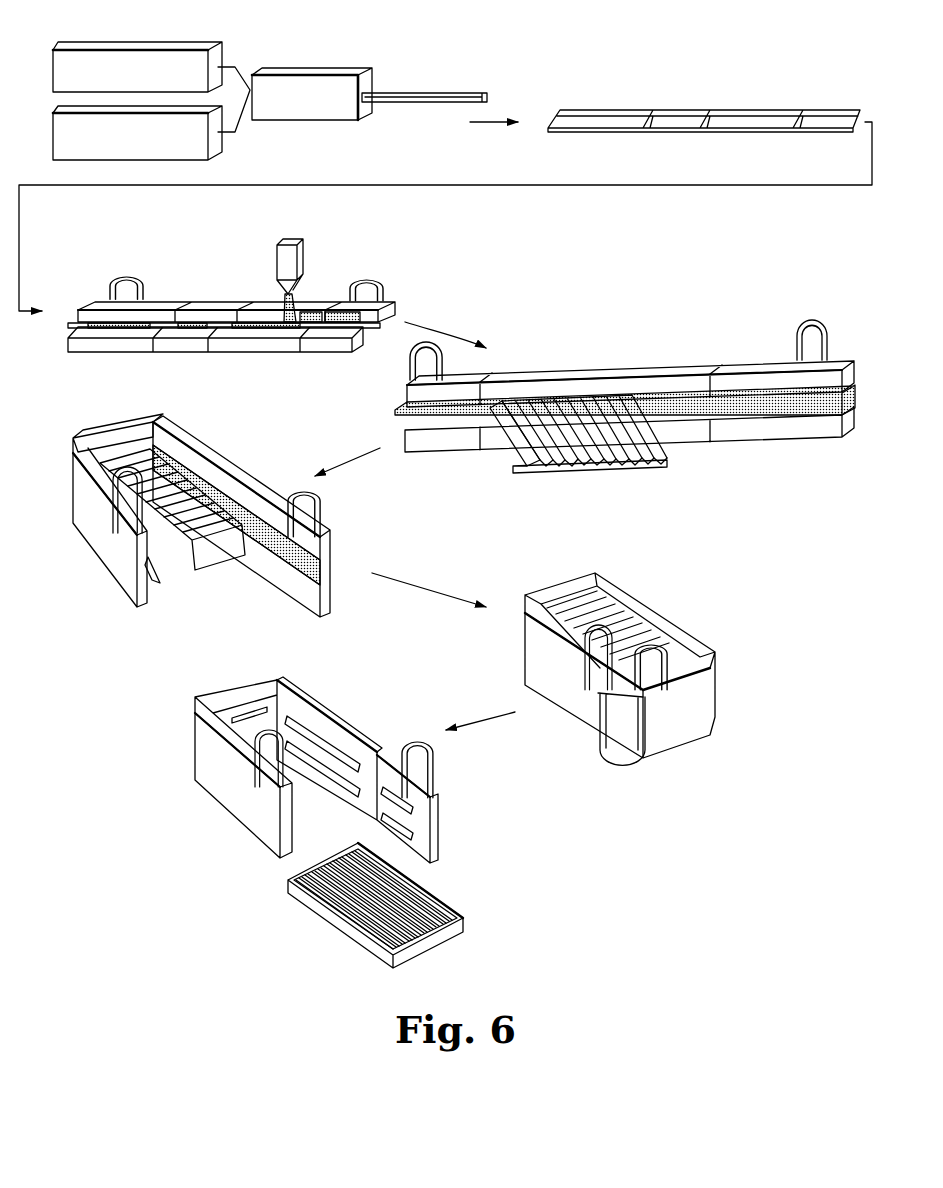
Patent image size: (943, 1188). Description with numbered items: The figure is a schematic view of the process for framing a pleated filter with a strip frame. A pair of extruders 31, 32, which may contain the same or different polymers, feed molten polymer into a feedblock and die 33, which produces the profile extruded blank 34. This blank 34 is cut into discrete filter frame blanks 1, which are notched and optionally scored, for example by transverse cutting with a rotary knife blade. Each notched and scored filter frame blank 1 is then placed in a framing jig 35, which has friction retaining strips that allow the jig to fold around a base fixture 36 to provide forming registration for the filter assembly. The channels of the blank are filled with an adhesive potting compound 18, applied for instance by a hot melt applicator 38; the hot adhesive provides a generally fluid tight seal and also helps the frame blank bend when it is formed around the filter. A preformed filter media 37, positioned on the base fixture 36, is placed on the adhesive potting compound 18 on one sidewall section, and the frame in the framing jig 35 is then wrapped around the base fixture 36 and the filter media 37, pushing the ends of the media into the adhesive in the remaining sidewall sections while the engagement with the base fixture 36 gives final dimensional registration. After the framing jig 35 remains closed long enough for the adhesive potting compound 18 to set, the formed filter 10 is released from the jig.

The extruder 31 is at (188, 57).
The extruder 32 is at (197, 143).
The feedblock and die 33 is at (335, 88).
The profile extruded blank 34 is at (455, 93).
The filter frame blank 1 is at (742, 104).
The hot melt applicator 38 is at (292, 243).
The adhesive potting compound 18 is at (300, 300).
The framing jig 35 is at (323, 305).
The filter media 37 is at (512, 438).
The base fixture 36 is at (628, 465).
The formed filter 10 is at (460, 896).